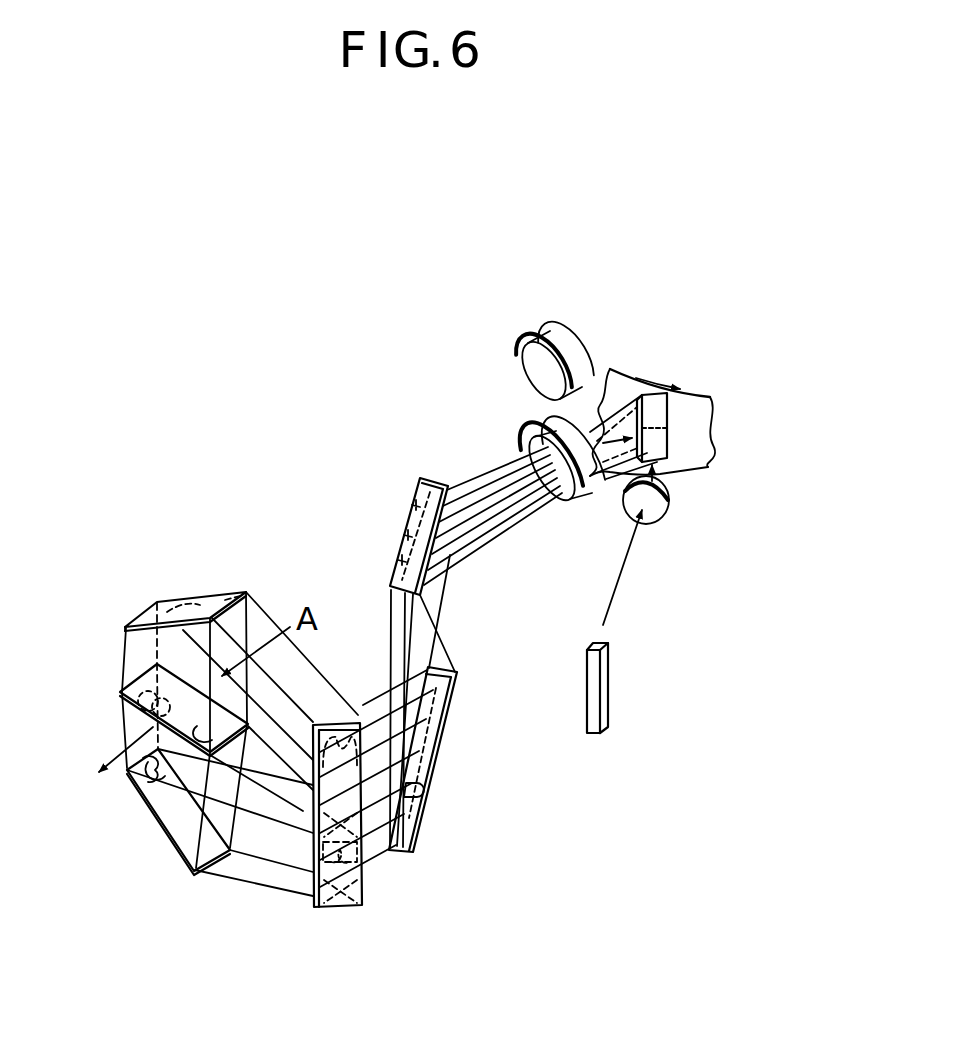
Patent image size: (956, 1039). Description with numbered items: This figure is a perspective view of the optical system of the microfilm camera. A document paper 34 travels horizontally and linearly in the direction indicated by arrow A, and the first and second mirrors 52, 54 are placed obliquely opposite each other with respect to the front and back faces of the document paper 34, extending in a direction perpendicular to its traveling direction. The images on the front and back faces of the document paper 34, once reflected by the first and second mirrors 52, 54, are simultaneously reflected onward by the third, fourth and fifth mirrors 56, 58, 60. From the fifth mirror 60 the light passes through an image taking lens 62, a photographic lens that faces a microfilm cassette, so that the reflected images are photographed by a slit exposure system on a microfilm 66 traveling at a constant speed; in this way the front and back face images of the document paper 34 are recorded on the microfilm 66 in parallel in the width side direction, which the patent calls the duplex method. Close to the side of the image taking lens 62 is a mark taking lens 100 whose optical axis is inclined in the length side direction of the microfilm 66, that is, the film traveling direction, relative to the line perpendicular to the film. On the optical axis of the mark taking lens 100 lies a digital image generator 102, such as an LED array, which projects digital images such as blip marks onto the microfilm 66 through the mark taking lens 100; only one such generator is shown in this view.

The document paper 34 is at (122, 692).
The first mirror 52 is at (173, 598).
The second mirror 54 is at (147, 808).
The third mirror 56 is at (317, 908).
The fourth mirror 58 is at (433, 820).
The fifth mirror 60 is at (398, 522).
The image taking lens 62 is at (524, 348).
The microfilm 66 is at (620, 368).
The mark taking lens 100 is at (654, 523).
The digital image generator 102 is at (607, 717).